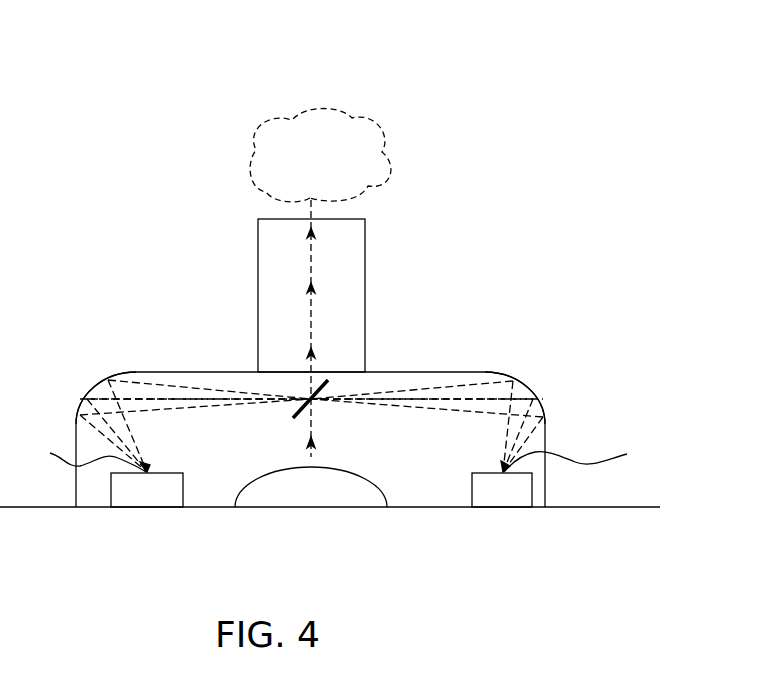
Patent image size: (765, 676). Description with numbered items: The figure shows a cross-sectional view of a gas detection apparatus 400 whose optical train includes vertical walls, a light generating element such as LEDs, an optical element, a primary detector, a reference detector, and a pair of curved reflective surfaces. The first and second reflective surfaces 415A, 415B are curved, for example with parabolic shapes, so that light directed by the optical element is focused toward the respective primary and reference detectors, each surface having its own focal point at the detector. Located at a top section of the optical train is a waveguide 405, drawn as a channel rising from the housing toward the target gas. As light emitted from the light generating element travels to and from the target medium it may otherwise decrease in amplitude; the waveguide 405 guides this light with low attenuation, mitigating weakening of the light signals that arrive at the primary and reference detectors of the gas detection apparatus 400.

The gas detection apparatus 400 is at (200, 72).
The waveguide 405 is at (372, 271).
The first reflective surface 415A is at (80, 406).
The second reflective surface 415B is at (514, 380).